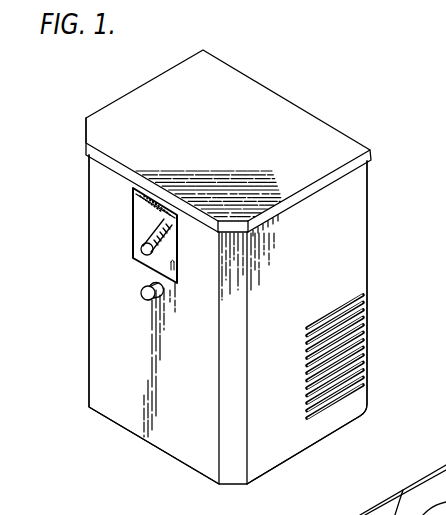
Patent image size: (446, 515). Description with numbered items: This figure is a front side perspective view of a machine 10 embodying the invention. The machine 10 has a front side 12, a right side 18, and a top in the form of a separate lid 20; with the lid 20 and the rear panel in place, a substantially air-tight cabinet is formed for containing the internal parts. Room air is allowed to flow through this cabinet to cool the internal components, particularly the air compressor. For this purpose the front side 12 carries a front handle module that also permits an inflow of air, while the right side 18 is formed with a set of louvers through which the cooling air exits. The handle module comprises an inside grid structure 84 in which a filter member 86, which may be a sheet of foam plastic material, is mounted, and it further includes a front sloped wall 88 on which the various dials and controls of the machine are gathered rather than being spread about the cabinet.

The machine 10 is at (302, 78).
The front side 12 is at (98, 342).
The right side 18 is at (267, 448).
The lid 20 is at (127, 108).
The inside grid structure 84 is at (403, 490).
The filter member 86 is at (133, 212).
The front sloped wall 88 is at (166, 269).